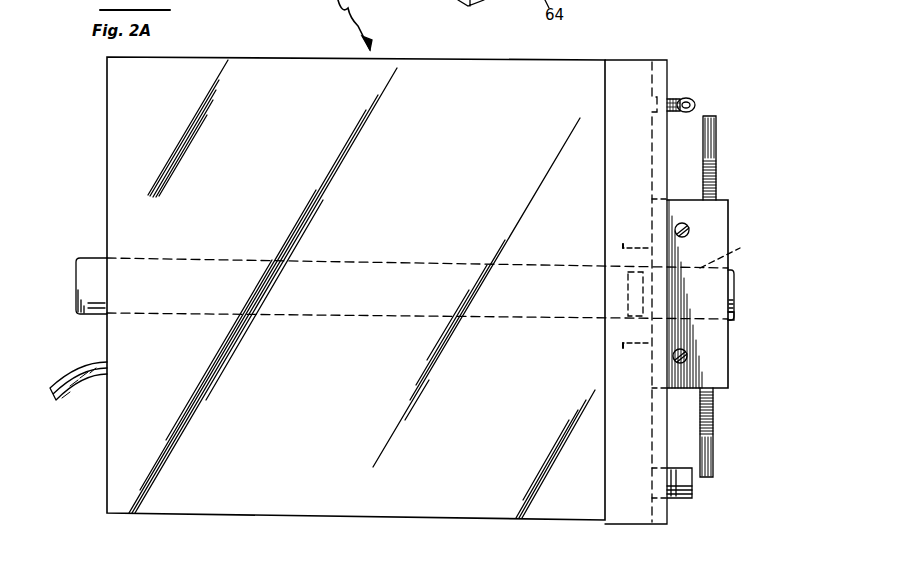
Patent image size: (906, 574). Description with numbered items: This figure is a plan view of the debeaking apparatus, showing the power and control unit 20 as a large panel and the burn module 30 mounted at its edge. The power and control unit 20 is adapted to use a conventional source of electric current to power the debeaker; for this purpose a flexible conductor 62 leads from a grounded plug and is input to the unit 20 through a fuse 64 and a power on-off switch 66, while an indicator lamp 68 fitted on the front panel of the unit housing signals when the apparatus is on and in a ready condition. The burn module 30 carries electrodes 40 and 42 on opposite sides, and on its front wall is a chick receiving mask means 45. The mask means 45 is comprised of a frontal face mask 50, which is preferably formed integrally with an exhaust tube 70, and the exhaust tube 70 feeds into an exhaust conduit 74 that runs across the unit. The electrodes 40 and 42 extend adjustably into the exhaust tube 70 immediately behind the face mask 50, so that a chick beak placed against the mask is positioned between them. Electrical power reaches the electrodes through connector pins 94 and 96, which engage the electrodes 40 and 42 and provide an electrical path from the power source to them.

The power and control unit 20 is at (245, 472).
The burn module 30 is at (733, 223).
The electrode 40 is at (717, 148).
The electrode 42 is at (712, 424).
The chick receiving mask means 45 is at (736, 297).
The frontal face mask 50 is at (736, 318).
The flexible conductor 62 is at (73, 392).
The fuse 64 is at (692, 496).
The power on-off switch 66 is at (694, 104).
The indicator lamp 68 is at (679, 100).
The exhaust tube 70 is at (742, 248).
The exhaust conduit 74 is at (93, 262).
The connector pin 94 is at (627, 244).
The connector pin 96 is at (628, 346).